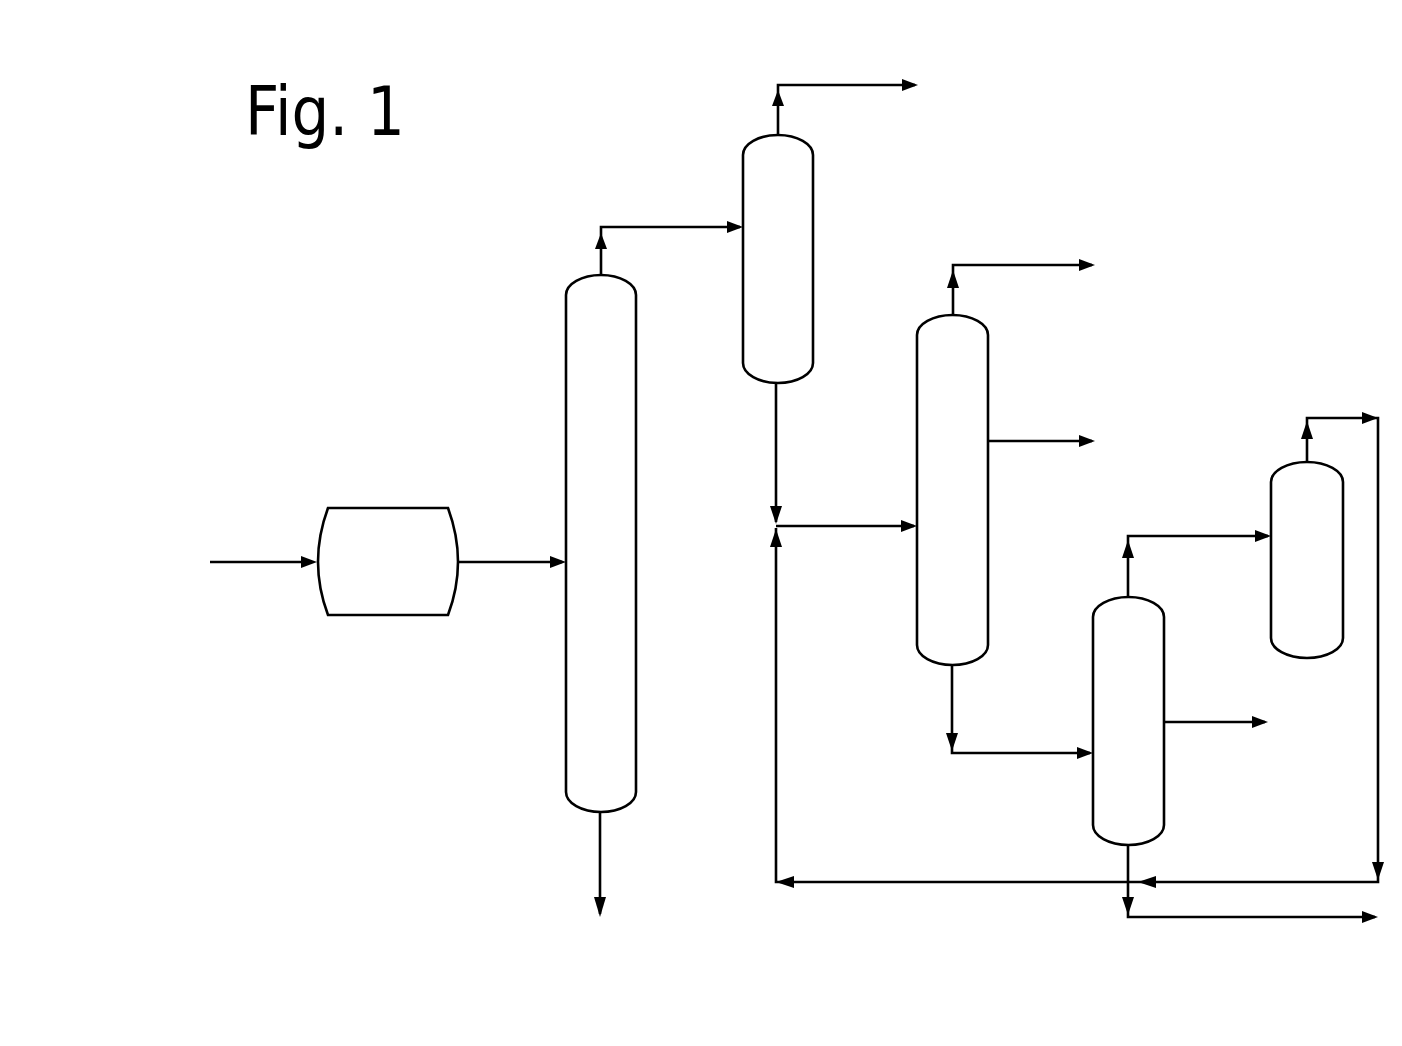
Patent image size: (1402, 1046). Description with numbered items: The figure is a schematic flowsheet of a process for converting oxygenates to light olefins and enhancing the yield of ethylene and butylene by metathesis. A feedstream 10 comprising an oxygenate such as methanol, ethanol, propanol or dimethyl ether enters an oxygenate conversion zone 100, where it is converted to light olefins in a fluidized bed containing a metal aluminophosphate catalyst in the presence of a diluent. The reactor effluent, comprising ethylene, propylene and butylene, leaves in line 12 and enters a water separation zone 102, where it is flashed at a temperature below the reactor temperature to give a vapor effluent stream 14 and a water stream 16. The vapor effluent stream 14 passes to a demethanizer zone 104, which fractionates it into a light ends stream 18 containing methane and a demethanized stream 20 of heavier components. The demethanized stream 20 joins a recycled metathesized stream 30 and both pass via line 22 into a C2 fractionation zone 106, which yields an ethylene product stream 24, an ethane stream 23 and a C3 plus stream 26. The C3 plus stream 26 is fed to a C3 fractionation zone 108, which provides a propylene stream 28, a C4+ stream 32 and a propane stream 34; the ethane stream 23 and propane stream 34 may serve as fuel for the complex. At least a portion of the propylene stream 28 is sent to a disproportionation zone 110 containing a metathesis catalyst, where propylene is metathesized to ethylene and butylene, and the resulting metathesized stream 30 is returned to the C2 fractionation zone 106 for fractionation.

The feedstream 10 is at (283, 560).
The reactor effluent stream line 12 is at (538, 560).
The vapor effluent stream 14 is at (718, 226).
The water stream 16 is at (601, 848).
The light ends stream 18 is at (804, 87).
The demethanized stream 20 is at (775, 445).
The line to C2 fractionation zone 22 is at (855, 525).
The ethane stream 23 is at (1073, 440).
The ethylene product stream 24 is at (1063, 264).
The C3 plus stream 26 is at (1022, 752).
The propylene stream 28 is at (1222, 535).
The metathesized stream 30 is at (1377, 423).
The C4+ stream 32 is at (1221, 916).
The propane stream 34 is at (1243, 721).
The oxygenate conversion zone 100 is at (400, 507).
The water separation zone 102 is at (563, 352).
The demethanizer zone 104 is at (814, 178).
The C2 fractionation zone 106 is at (916, 340).
The C3 fractionation zone 108 is at (1098, 605).
The disproportionation zone 110 is at (1283, 470).